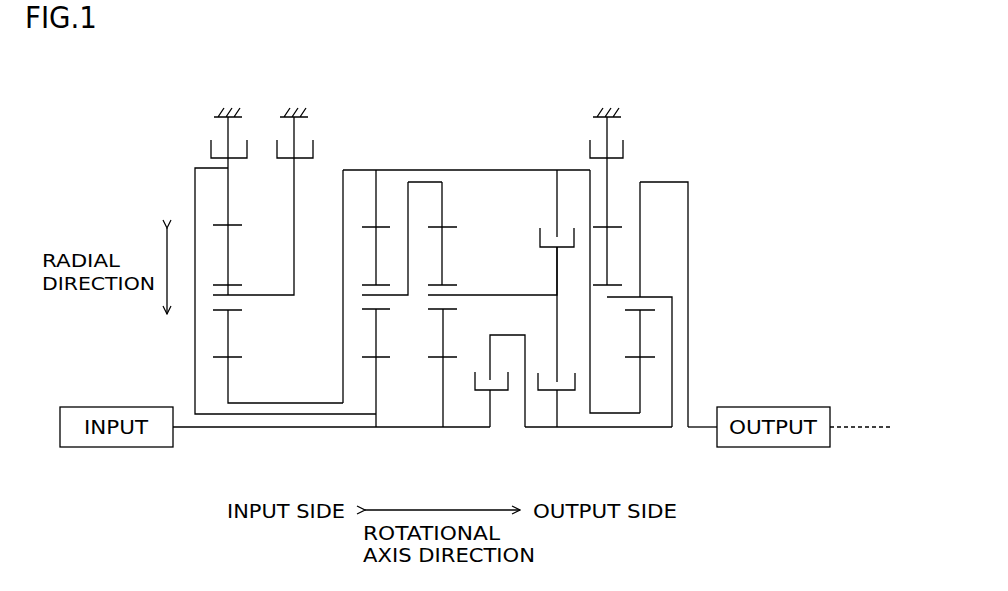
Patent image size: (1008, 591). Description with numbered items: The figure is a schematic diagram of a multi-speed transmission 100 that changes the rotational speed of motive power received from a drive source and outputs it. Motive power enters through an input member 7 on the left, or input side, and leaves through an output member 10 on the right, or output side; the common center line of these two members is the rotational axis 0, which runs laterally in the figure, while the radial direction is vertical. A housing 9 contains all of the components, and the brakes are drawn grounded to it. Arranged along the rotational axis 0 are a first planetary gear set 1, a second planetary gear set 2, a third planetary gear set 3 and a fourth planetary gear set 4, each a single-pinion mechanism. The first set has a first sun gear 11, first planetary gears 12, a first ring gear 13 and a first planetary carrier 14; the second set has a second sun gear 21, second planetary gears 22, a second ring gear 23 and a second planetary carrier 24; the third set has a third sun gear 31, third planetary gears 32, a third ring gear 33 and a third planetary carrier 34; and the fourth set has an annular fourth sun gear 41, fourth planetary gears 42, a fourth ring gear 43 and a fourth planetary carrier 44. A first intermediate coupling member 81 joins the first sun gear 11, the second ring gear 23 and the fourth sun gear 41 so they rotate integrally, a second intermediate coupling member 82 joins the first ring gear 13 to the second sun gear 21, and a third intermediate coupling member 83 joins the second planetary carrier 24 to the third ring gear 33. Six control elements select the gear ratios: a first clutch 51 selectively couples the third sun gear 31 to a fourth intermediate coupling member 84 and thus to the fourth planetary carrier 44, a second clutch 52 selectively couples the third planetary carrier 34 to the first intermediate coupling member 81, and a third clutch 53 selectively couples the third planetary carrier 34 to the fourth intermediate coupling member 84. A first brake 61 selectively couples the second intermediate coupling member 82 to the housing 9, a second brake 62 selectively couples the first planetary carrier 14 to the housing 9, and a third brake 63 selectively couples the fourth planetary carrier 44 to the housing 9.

The multi-speed transmission 100 is at (732, 134).
The rotational axis 0 is at (877, 428).
The first planetary gear set 1 is at (285, 286).
The second planetary gear set 2 is at (402, 300).
The third planetary gear set 3 is at (492, 300).
The fourth planetary gear set 4 is at (640, 316).
The input member 7 is at (190, 428).
The housing 9 is at (228, 108).
The output member 10 is at (700, 428).
The first sun gear 11 is at (230, 386).
The first planetary gears 12 is at (230, 343).
The first ring gear 13 is at (229, 180).
The first planetary carrier 14 is at (295, 297).
The second sun gear 21 is at (377, 398).
The second planetary gears 22 is at (378, 320).
The second ring gear 23 is at (377, 178).
The second planetary carrier 24 is at (395, 293).
The third sun gear 31 is at (444, 398).
The third planetary gears 32 is at (445, 320).
The third ring gear 33 is at (445, 190).
The third planetary carrier 34 is at (497, 293).
The fourth sun gear 41 is at (641, 398).
The fourth planetary gears 42 is at (639, 330).
The fourth ring gear 43 is at (638, 212).
The fourth planetary carrier 44 is at (611, 305).
The first clutch 51 is at (498, 392).
The second clutch 52 is at (547, 249).
The third clutch 53 is at (570, 392).
The first brake 61 is at (211, 152).
The second brake 62 is at (313, 152).
The third brake 63 is at (623, 152).
The first intermediate coupling member 81 is at (313, 412).
The second intermediate coupling member 82 is at (312, 428).
The third intermediate coupling member 83 is at (425, 181).
The fourth intermediate coupling member 84 is at (633, 428).